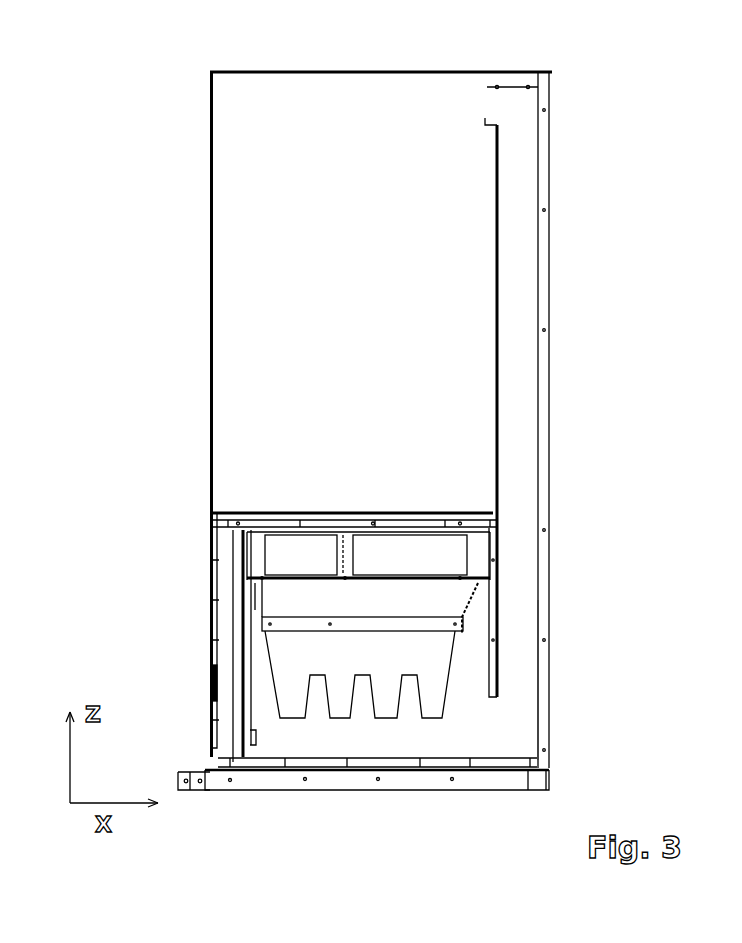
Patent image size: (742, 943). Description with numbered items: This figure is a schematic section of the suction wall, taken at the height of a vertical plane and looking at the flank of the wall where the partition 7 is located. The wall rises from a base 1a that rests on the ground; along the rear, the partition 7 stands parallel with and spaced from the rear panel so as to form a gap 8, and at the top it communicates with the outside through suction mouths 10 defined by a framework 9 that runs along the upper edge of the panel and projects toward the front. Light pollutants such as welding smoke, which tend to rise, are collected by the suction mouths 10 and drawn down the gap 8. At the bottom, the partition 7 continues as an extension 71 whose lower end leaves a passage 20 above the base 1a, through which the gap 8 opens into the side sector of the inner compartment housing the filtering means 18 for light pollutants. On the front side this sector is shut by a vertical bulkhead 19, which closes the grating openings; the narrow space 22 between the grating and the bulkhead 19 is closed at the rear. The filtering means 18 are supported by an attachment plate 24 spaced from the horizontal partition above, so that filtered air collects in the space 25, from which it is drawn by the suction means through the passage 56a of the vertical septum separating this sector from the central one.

The base 1a is at (287, 782).
The partition 7 is at (550, 72).
The gap 8 is at (513, 305).
The framework 9 is at (521, 82).
The suction mouths 10 is at (487, 118).
The filtering means 18 is at (381, 652).
The vertical bulkhead 19 is at (243, 680).
The passage 20 is at (493, 728).
The space 22 is at (222, 628).
The attachment plate 24 is at (480, 583).
The space 25 is at (283, 556).
The passage 56a is at (448, 560).
The extension 71 is at (549, 642).